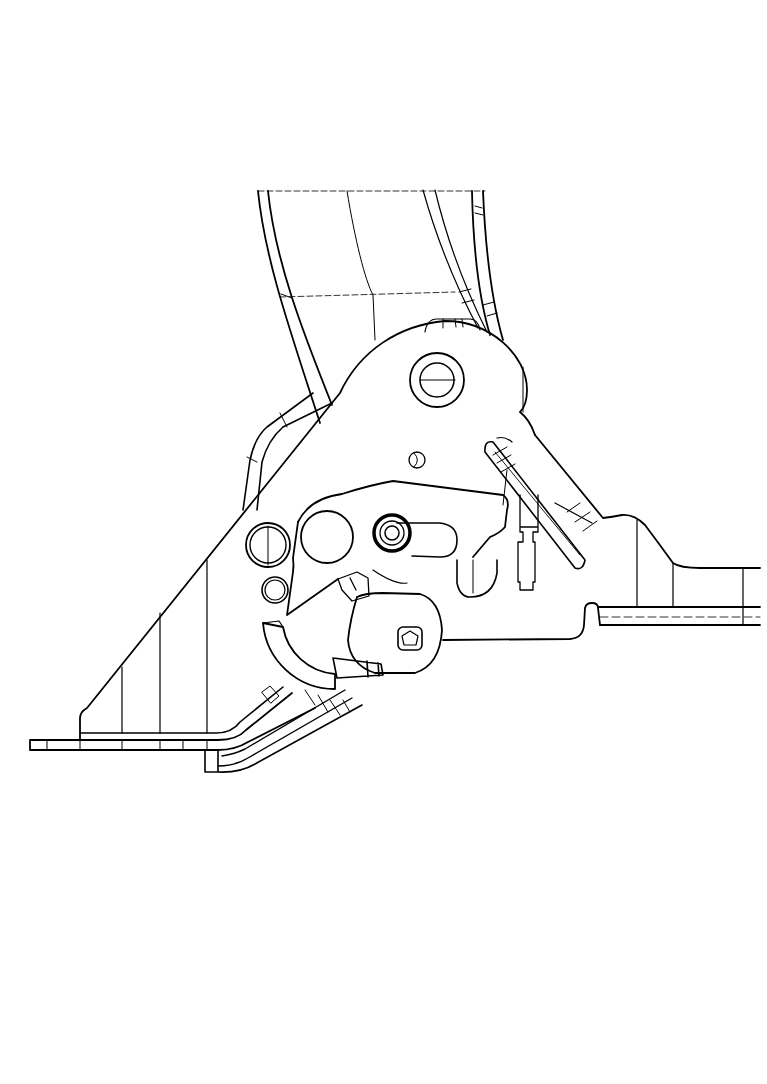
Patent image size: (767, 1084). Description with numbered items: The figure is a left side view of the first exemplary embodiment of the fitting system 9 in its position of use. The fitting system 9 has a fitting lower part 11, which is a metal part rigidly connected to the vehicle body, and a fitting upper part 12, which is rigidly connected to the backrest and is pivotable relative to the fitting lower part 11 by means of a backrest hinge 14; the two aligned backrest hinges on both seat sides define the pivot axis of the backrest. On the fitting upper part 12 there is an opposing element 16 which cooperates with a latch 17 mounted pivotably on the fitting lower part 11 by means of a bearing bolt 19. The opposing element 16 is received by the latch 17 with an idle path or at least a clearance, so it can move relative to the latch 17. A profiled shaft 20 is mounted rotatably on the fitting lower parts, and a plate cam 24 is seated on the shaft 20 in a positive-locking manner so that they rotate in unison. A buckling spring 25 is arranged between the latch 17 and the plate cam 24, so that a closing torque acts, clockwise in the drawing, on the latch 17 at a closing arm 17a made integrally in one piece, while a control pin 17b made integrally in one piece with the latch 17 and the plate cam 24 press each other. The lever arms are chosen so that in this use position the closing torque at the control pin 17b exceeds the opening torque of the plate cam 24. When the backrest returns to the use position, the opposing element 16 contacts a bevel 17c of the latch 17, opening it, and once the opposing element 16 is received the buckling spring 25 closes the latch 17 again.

The fitting system 9 is at (603, 288).
The fitting lower part 11 is at (183, 668).
The fitting upper part 12 is at (303, 220).
The backrest hinge 14 is at (417, 380).
The opposing element 16 is at (405, 550).
The latch 17 is at (357, 487).
The closing arm 17a is at (240, 572).
The control pin 17b is at (340, 578).
The bevel 17c is at (497, 560).
The bearing bolt 19 is at (323, 537).
The shaft 20 is at (378, 641).
The plate cam 24 is at (391, 664).
The buckling spring 25 is at (320, 715).